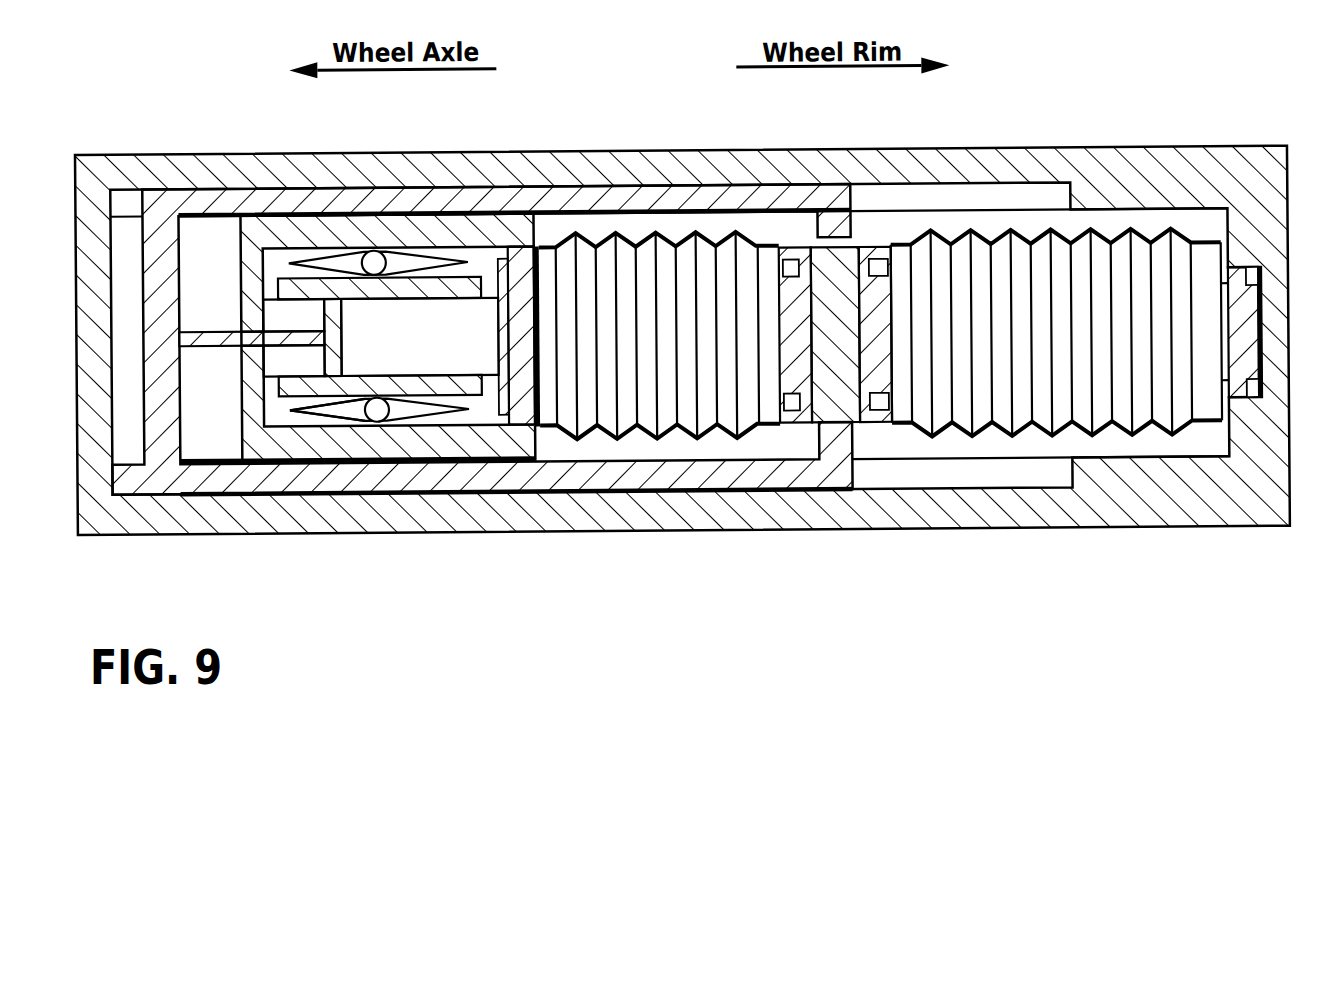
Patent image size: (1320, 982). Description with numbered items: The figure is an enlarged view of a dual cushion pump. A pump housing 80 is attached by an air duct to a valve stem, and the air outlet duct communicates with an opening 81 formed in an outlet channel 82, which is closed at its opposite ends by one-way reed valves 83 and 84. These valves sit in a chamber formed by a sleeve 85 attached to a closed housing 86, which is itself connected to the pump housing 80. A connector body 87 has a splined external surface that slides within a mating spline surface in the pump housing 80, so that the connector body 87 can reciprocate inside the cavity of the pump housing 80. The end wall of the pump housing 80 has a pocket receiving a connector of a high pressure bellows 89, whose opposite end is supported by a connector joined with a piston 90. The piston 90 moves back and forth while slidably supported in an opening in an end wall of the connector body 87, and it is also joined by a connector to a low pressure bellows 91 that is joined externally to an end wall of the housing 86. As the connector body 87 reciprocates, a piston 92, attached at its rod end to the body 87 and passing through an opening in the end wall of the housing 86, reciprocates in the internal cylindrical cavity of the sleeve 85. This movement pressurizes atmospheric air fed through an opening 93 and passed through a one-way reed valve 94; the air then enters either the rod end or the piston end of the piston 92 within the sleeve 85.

The pump housing 80 is at (793, 539).
The opening 81 is at (377, 425).
The outlet channel 82 is at (348, 420).
The one-way reed valve 83 is at (320, 425).
The one-way reed valve 84 is at (436, 427).
The sleeve 85 is at (263, 405).
The closed housing 86 is at (238, 253).
The connector body 87 is at (142, 275).
The high pressure bellows 89 is at (1127, 240).
The piston 90 is at (873, 251).
The low pressure bellows 91 is at (615, 237).
The piston 92 is at (340, 335).
The opening 93 is at (380, 256).
The one-way reed valve 94 is at (327, 257).